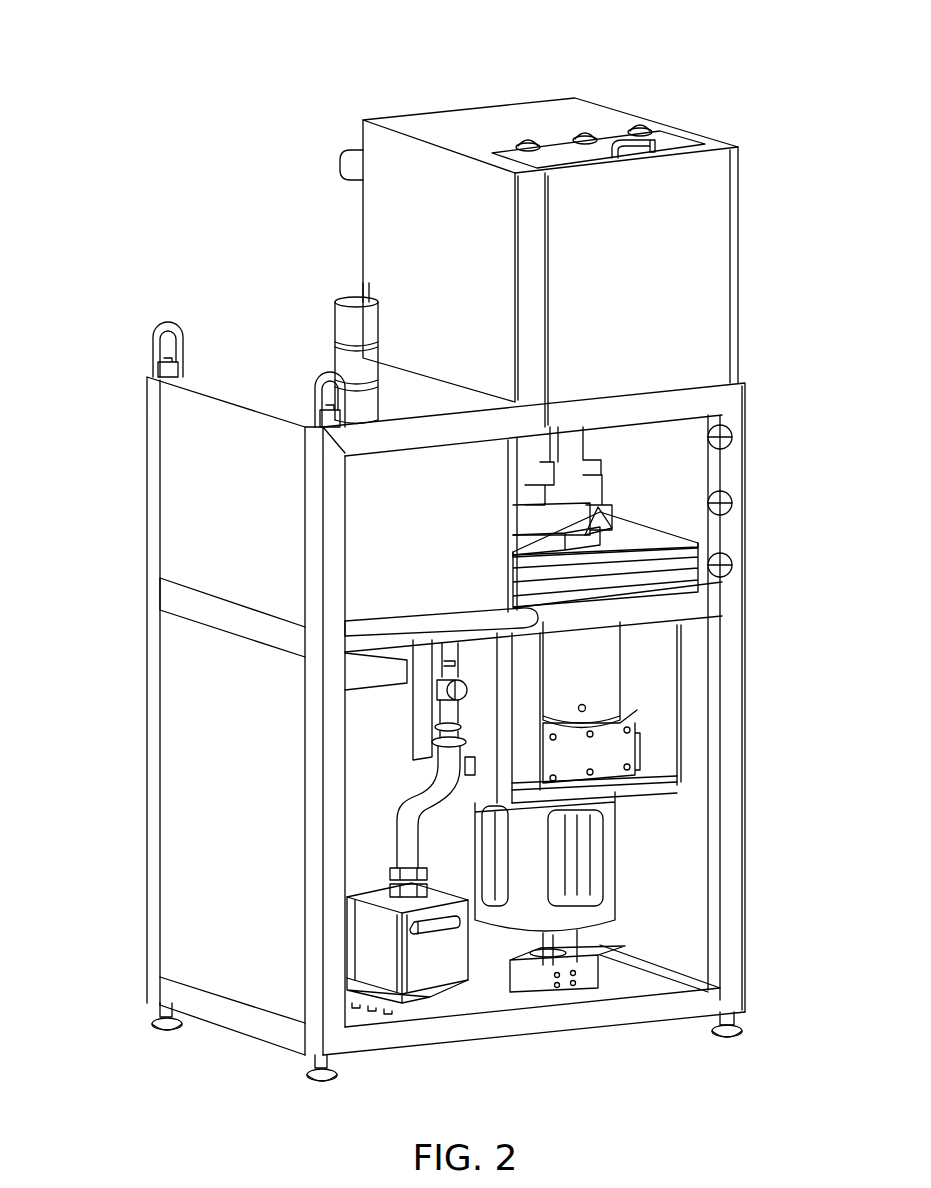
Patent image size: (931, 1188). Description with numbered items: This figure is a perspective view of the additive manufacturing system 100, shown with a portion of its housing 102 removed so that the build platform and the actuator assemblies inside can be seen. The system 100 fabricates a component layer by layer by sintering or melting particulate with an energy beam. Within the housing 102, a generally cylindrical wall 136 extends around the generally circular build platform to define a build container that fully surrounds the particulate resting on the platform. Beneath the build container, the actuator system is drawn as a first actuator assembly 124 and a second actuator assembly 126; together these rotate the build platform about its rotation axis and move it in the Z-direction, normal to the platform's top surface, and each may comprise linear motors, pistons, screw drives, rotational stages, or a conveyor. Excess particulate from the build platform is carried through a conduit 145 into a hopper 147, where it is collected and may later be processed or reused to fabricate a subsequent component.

The additive manufacturing system 100 is at (556, 74).
The housing 102 is at (160, 463).
The first actuator assembly 124 is at (608, 751).
The second actuator assembly 126 is at (600, 968).
The wall 136 is at (587, 672).
The conduit 145 is at (396, 850).
The hopper 147 is at (367, 950).